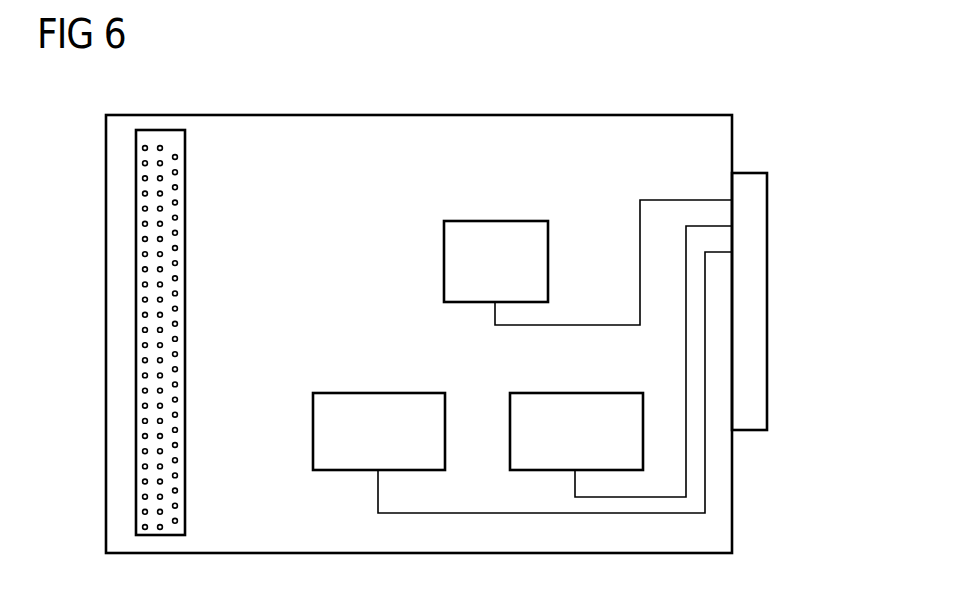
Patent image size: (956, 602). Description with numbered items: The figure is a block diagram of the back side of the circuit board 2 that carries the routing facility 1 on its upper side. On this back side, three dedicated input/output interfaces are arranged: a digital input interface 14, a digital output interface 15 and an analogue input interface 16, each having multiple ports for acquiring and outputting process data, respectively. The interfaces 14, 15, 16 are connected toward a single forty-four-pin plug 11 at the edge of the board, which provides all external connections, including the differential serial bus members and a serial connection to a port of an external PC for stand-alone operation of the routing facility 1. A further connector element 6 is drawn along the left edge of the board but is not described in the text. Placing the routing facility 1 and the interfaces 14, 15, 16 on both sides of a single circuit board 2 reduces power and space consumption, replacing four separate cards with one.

The routing facility 1 is at (698, 87).
The circuit board 2 is at (307, 115).
The connector 6 is at (162, 129).
The 44-pin plug 11 is at (767, 275).
The digital input interface 14 is at (355, 393).
The digital output interface 15 is at (490, 221).
The analogue input interface 16 is at (550, 393).